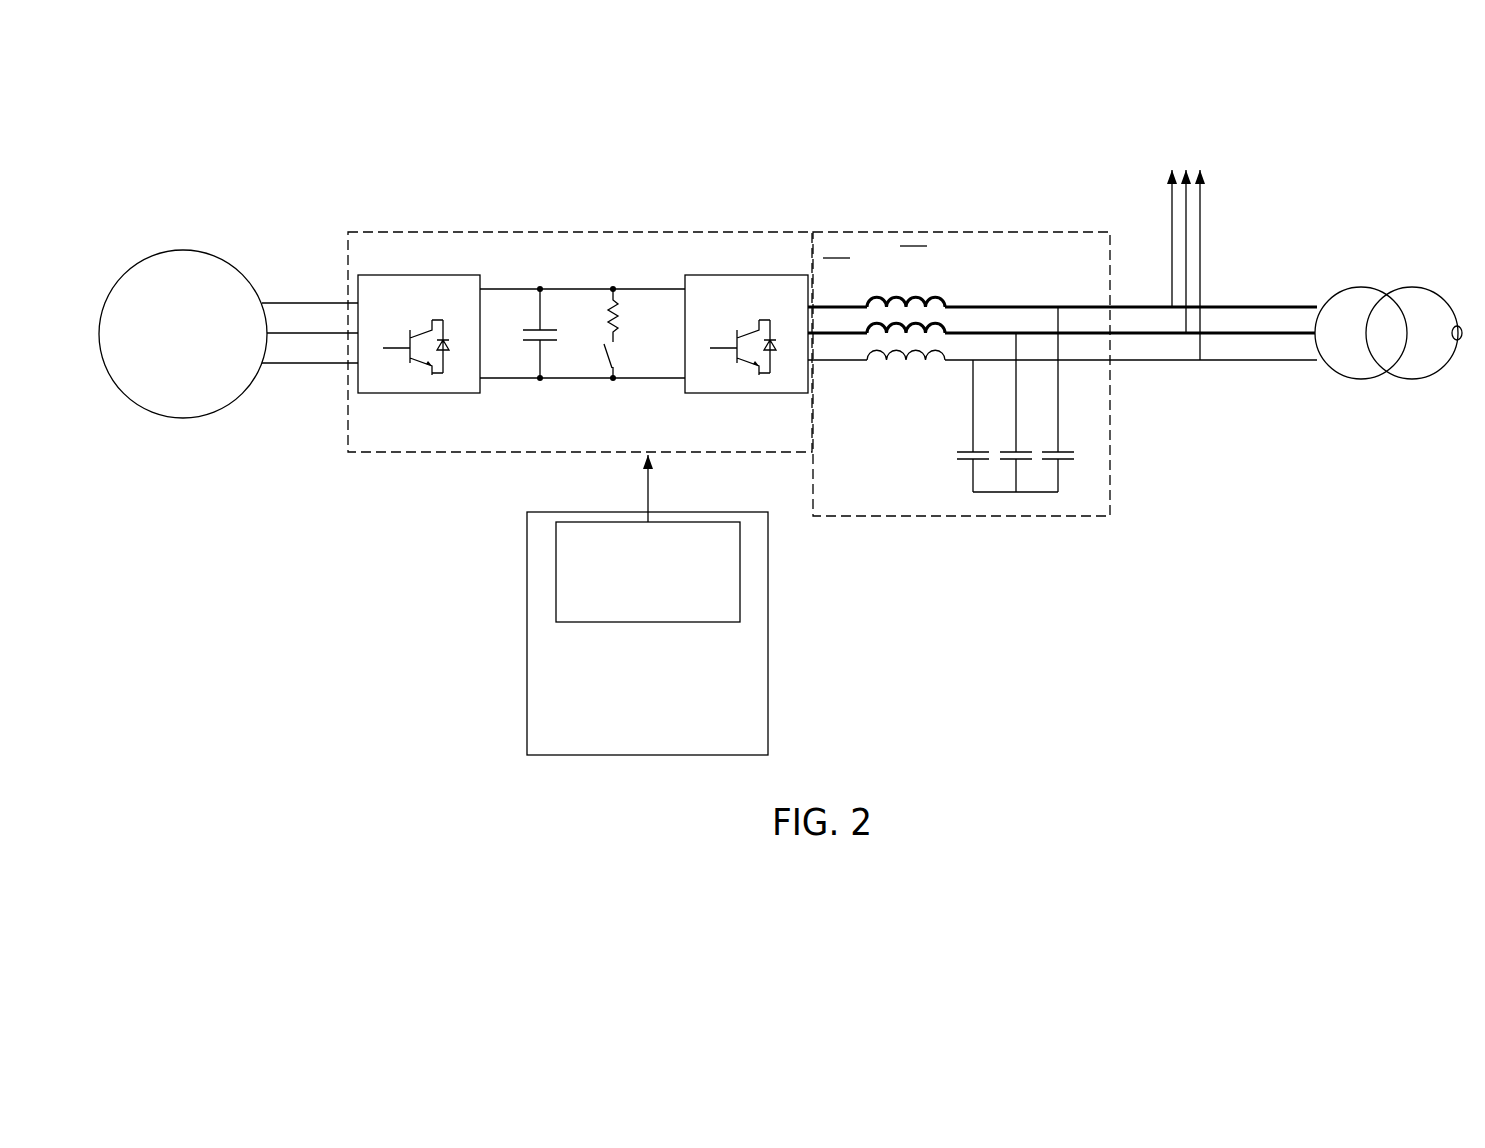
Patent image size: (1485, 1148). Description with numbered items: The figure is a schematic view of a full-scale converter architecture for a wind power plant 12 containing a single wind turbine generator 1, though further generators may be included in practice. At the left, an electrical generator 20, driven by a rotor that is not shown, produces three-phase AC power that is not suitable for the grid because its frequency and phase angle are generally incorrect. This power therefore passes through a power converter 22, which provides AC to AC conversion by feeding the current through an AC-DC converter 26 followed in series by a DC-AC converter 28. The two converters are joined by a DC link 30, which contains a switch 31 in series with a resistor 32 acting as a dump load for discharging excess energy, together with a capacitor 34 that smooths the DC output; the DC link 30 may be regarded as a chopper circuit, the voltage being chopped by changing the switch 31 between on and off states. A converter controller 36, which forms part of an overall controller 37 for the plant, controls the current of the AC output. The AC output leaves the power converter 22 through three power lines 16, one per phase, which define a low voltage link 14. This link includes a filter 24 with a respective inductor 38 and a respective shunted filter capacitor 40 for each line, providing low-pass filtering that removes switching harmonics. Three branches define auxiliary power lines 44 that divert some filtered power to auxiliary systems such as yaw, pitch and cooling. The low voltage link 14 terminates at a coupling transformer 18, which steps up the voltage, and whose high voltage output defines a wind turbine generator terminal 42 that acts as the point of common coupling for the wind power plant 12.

The wind turbine generator 1 is at (235, 570).
The wind power plant 12 is at (1205, 600).
The low voltage link 14 is at (1237, 412).
The low voltage lines 16 is at (1265, 331).
The coupling transformer 18 is at (1400, 288).
The electrical generator 20 is at (183, 392).
The power converter 22 is at (383, 437).
The filter 24 is at (898, 483).
The AC-DC converter 26 is at (450, 275).
The DC-AC converter 28 is at (718, 275).
The DC link 30 is at (542, 395).
The switch 31 is at (592, 362).
The resistor 32 is at (612, 305).
The capacitor 34 is at (535, 327).
The converter controller 36 is at (740, 597).
The overall controller 37 is at (768, 680).
The inductor 38 is at (945, 322).
The filter capacitor 40 is at (1017, 484).
The wind turbine generator terminal 42 is at (1457, 345).
The auxiliary power lines 44 is at (1200, 228).